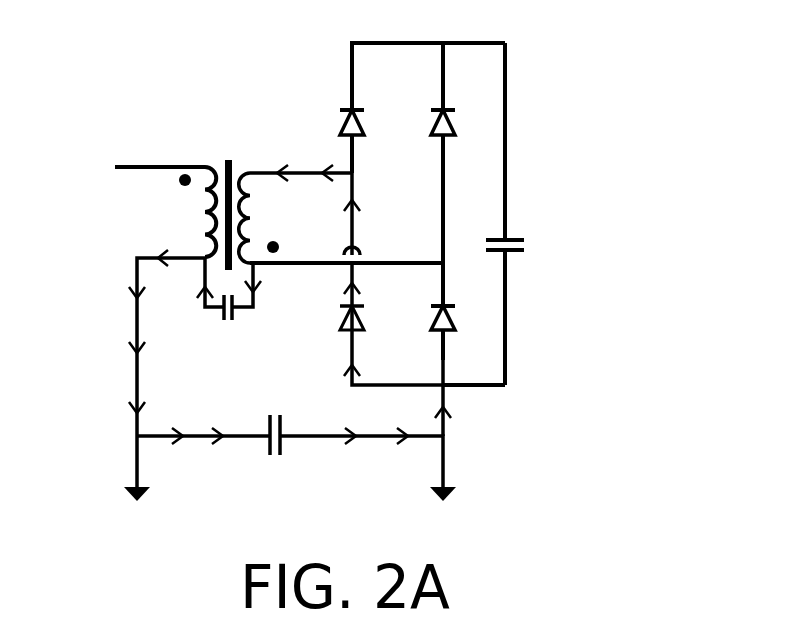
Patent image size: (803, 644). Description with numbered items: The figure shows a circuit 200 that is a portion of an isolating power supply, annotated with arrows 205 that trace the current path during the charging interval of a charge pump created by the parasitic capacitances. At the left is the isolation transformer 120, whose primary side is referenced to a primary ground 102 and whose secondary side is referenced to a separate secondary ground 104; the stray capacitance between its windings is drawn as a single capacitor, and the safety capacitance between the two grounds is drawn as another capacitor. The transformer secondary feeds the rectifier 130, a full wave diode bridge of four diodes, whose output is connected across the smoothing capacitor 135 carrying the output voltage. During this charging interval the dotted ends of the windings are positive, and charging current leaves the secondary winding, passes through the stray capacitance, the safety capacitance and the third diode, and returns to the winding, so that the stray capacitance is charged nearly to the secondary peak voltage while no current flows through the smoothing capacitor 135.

The circuit 200 is at (723, 34).
The isolation transformer 120 is at (228, 140).
The rectifier 130 is at (322, 100).
The smoothing capacitor 135 is at (525, 226).
The arrows 205 is at (115, 357).
The primary ground 102 is at (112, 492).
The secondary ground 104 is at (419, 499).